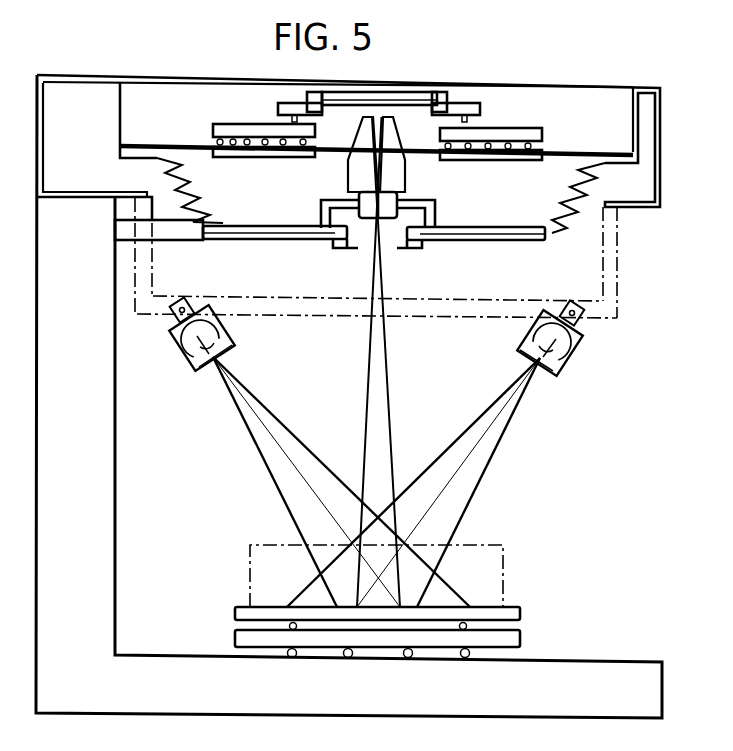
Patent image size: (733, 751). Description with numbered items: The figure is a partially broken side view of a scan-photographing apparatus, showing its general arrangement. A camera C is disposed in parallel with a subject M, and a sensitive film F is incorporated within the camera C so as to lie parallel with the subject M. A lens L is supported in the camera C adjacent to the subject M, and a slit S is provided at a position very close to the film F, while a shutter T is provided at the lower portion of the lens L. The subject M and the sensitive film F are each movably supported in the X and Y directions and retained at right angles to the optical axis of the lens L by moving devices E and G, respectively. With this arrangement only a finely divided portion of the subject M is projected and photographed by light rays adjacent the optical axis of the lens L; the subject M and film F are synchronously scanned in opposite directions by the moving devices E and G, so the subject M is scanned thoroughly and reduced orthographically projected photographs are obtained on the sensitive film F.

The moving device G is at (498, 127).
The sensitive film F is at (415, 107).
The slit S is at (376, 154).
The camera C is at (348, 157).
The shutter T is at (347, 249).
The lens L is at (388, 218).
The subject M is at (473, 545).
The moving device E is at (524, 612).